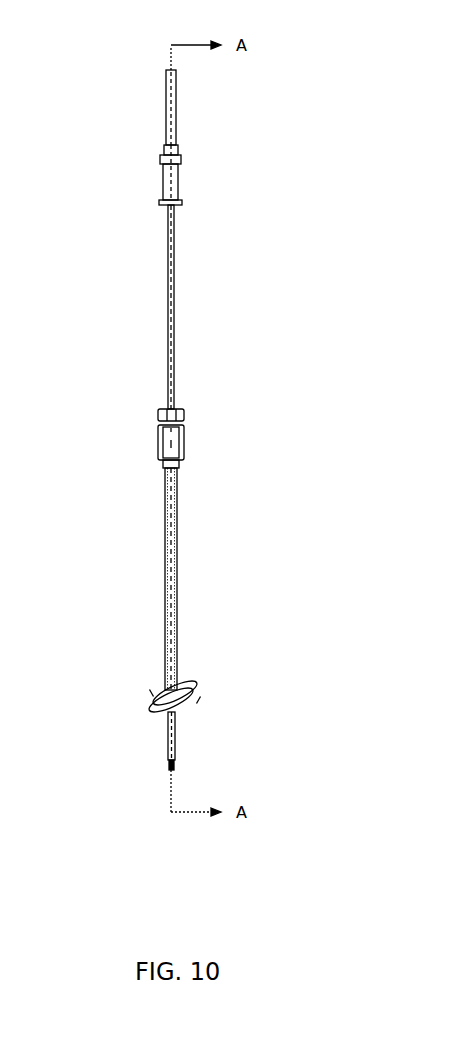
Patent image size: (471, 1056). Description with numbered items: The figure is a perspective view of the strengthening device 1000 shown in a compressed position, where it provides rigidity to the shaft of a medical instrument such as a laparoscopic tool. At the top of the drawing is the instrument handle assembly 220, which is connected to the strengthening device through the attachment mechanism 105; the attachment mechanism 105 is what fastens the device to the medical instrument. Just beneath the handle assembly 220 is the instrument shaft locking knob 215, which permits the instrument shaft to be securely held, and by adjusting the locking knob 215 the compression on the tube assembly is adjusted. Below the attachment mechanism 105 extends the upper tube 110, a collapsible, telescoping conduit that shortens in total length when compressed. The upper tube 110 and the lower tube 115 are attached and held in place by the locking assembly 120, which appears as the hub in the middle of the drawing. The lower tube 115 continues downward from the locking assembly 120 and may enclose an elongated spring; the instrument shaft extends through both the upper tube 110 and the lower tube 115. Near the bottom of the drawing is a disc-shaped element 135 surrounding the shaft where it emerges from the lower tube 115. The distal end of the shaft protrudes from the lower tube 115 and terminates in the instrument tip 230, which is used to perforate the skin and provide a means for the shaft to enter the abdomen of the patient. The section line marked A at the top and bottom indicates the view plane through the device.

The medical device assembly 1000 is at (140, 49).
The handle assembly 220 is at (177, 98).
The instrument shaft locking knob 215 is at (181, 158).
The attachment mechanism 105 is at (182, 203).
The upper tube 110 is at (174, 312).
The locking assembly 120 is at (185, 443).
The lower tube 115 is at (177, 588).
The disc / stop 135 is at (190, 690).
The instrument tip 230 is at (166, 765).